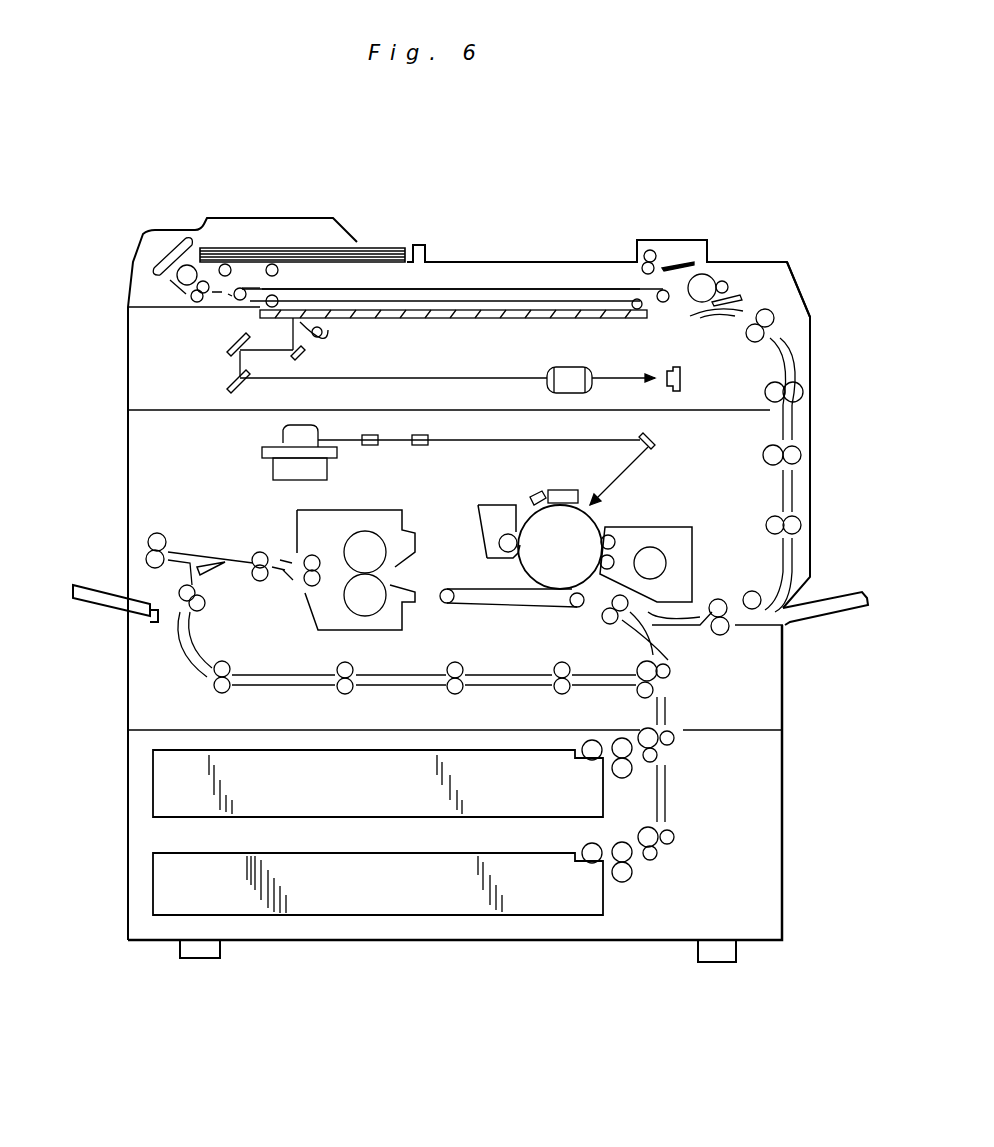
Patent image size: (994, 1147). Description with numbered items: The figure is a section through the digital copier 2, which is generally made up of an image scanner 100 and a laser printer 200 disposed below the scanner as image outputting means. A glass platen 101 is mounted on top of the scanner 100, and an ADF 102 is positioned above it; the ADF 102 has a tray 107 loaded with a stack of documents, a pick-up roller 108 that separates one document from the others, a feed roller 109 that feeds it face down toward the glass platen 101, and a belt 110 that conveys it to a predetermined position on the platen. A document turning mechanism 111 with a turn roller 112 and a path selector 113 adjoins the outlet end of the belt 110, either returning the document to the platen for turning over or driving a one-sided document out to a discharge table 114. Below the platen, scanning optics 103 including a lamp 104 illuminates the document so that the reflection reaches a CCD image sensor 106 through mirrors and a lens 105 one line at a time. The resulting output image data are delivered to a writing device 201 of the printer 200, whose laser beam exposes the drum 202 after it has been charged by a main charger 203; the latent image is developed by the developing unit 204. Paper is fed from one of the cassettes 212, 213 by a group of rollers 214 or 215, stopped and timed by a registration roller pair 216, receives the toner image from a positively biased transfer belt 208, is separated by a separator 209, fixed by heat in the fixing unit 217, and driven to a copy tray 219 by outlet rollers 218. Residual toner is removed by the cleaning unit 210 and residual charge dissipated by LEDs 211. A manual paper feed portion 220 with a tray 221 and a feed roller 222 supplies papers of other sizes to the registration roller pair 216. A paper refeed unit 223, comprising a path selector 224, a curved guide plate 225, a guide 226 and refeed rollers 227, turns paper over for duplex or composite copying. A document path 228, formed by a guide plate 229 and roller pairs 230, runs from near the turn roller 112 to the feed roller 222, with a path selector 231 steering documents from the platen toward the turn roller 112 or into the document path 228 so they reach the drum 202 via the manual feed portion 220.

The copier 2 is at (117, 417).
The image scanner 100 is at (797, 357).
The glass platen 101 is at (462, 308).
The automatic document feeder 102 is at (526, 285).
The scanning optics 103 is at (212, 357).
The lamp 104 is at (322, 335).
The lens 105 is at (553, 368).
The CCD image sensor 106 is at (682, 378).
The tray 107 is at (313, 250).
The pick-up roller 108 is at (225, 265).
The feed roller 109 is at (187, 268).
The belt 110 is at (382, 288).
The document turning mechanism 111 is at (745, 282).
The turn roller 112 is at (703, 283).
The path selector 113 is at (690, 262).
The discharge table 114 is at (507, 264).
The laser printer 200 is at (758, 495).
The writing device 201 is at (270, 437).
The drum 202 is at (580, 558).
The main charger 203 is at (563, 487).
The developing unit 204 is at (683, 522).
The transfer belt 208 is at (503, 606).
The separator 209 is at (518, 567).
The cleaning unit 210 is at (480, 523).
The LEDs 211 is at (533, 493).
The cassette 212 is at (392, 777).
The cassette 213 is at (392, 878).
The group of rollers 214 is at (643, 770).
The group of rollers 215 is at (653, 875).
The registration roller pair 216 is at (603, 614).
The fixing unit 217 is at (297, 523).
The outlet rollers 218 is at (147, 530).
The copy tray 219 is at (90, 606).
The manual paper feed portion 220 is at (767, 638).
The tray 221 is at (837, 613).
The feed roller 222 is at (722, 635).
The paper refeed unit 223 is at (185, 678).
The path selector 224 is at (200, 573).
The curved guide plate 225 is at (175, 642).
The guide 226 is at (270, 670).
The refeed rollers 227 is at (353, 693).
The document path 228 is at (792, 432).
The guide plate 229 is at (792, 505).
The roller pairs 230 is at (794, 525).
The path selector 231 is at (743, 297).